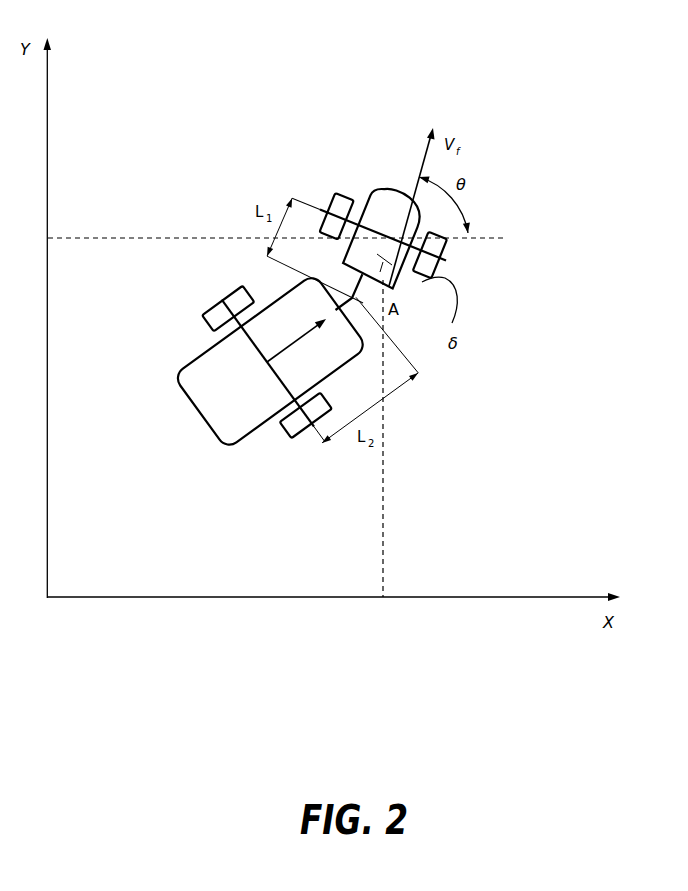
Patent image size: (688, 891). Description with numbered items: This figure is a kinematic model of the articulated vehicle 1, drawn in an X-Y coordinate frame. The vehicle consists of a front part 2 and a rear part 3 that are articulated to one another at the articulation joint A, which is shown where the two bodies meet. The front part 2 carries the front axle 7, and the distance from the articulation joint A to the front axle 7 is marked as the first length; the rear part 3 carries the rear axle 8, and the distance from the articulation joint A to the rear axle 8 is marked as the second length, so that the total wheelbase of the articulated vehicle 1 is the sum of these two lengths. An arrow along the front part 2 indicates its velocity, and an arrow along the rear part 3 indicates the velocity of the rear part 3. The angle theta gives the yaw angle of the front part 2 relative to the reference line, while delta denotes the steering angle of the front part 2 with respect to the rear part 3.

The articulated vehicle 1 is at (240, 187).
The front part 2 is at (376, 202).
The rear part 3 is at (184, 372).
The front axle 7 is at (442, 254).
The rear axle 8 is at (283, 380).